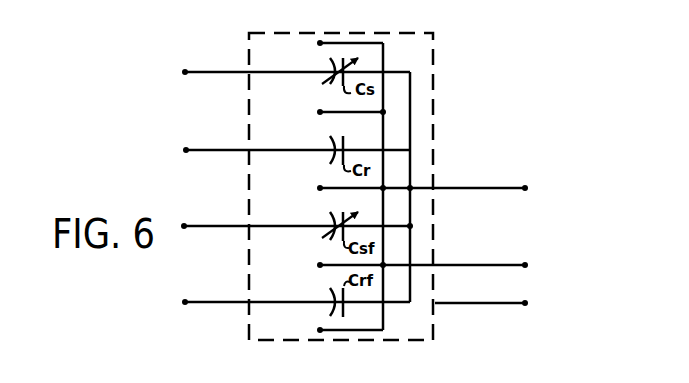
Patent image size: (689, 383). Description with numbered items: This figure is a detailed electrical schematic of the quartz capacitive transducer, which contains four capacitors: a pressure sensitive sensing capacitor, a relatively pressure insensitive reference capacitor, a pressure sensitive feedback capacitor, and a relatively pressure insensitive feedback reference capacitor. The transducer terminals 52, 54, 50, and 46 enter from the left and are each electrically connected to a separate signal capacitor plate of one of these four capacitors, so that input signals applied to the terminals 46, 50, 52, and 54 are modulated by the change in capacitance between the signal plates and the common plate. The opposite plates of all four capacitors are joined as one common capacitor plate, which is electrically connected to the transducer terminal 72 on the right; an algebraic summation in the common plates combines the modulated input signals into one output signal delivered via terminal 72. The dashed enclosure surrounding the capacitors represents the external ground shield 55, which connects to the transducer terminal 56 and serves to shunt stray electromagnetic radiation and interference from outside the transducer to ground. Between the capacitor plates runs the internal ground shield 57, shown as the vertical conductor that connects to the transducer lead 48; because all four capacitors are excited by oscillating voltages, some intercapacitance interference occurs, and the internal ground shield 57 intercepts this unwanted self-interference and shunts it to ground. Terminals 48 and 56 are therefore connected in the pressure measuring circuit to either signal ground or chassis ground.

The transducer terminal 46 is at (203, 301).
The transducer terminal 48 is at (487, 265).
The transducer terminal 50 is at (204, 225).
The transducer terminal 52 is at (203, 71).
The transducer terminal 54 is at (220, 149).
The external ground shield 55 is at (383, 33).
The transducer terminal 56 is at (483, 302).
The internal ground shield 57 is at (385, 126).
The transducer terminal 72 is at (497, 187).